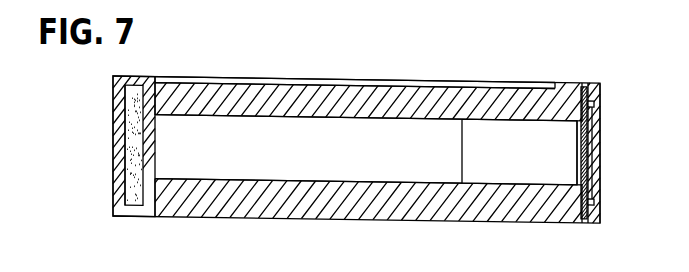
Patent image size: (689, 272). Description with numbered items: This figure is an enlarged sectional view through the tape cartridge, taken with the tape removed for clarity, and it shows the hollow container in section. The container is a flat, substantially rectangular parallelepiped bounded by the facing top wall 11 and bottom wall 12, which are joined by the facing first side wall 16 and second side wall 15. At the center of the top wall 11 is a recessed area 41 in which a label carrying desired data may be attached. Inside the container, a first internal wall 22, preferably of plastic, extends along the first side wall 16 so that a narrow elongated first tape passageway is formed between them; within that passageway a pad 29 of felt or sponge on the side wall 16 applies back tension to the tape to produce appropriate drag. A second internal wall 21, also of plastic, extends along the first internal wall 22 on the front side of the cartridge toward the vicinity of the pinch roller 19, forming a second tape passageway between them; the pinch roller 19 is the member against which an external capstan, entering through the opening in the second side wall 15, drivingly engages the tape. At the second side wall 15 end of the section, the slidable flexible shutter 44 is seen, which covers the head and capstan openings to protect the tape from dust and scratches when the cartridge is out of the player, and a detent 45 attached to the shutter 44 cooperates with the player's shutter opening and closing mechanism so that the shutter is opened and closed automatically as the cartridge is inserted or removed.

The top wall 11 is at (403, 105).
The bottom wall 12 is at (528, 200).
The second side wall 15 is at (598, 98).
The first side wall 16 is at (117, 177).
The pinch roller 19 is at (515, 148).
The second internal wall 21 is at (200, 128).
The first internal wall 22 is at (140, 143).
The pad 29 is at (128, 104).
The recessed area 41 is at (459, 80).
The flexible shutter 44 is at (590, 158).
The detent 45 is at (595, 140).